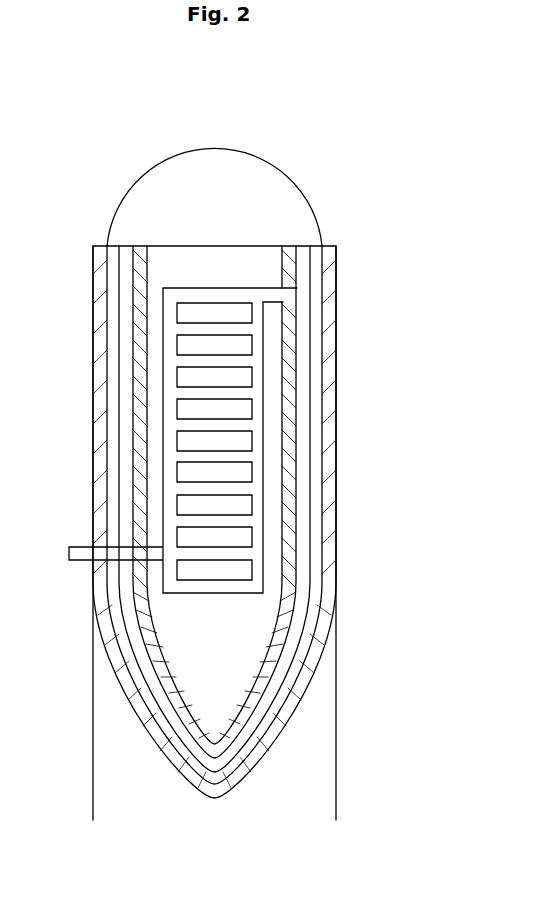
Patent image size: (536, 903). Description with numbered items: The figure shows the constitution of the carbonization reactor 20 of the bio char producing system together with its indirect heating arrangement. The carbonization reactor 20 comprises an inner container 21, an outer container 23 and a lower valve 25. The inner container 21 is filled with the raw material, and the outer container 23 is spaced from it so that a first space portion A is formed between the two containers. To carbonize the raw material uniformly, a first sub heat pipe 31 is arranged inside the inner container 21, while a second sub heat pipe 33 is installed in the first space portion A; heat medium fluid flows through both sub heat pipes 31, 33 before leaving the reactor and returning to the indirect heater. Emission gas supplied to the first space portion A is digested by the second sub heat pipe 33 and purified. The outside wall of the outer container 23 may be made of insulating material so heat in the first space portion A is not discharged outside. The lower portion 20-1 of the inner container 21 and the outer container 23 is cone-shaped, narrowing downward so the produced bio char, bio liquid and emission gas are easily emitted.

The carbonization reactor 20 is at (226, 88).
The lower valve 25 is at (153, 159).
The outer container 23 is at (335, 270).
The second sub heat pipe 33 is at (112, 318).
The inner container 21 is at (290, 381).
The first space portion A is at (312, 444).
The first sub heat pipe 31 is at (180, 466).
The lower portion 20-1 is at (252, 778).